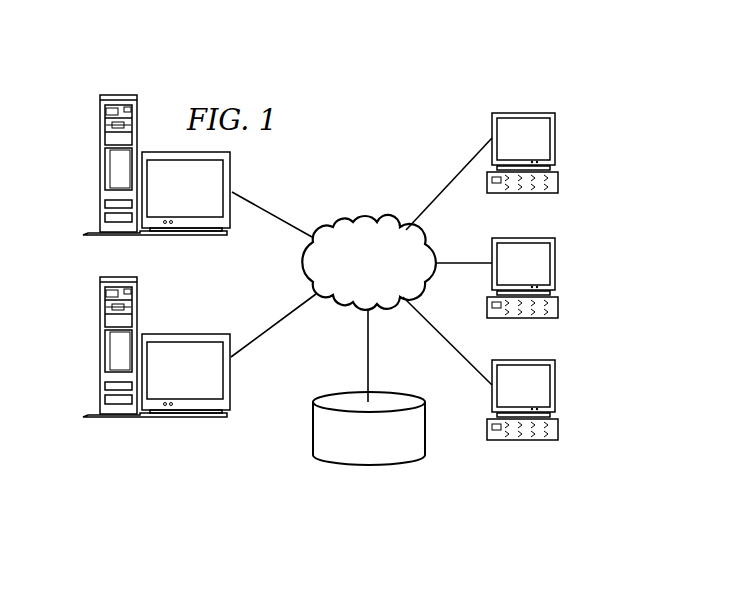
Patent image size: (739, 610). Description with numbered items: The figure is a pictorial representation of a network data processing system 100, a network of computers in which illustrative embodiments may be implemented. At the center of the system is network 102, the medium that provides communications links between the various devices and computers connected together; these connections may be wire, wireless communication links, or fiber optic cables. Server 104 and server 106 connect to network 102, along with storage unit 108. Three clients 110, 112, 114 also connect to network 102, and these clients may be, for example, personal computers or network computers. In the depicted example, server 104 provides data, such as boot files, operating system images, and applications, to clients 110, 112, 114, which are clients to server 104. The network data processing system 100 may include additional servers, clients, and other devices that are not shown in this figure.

The network data processing system 100 is at (409, 124).
The network 102 is at (345, 222).
The server 104 is at (100, 167).
The server 106 is at (100, 348).
The storage unit 108 is at (353, 465).
The client 110 is at (555, 140).
The client 112 is at (555, 270).
The client 114 is at (555, 387).